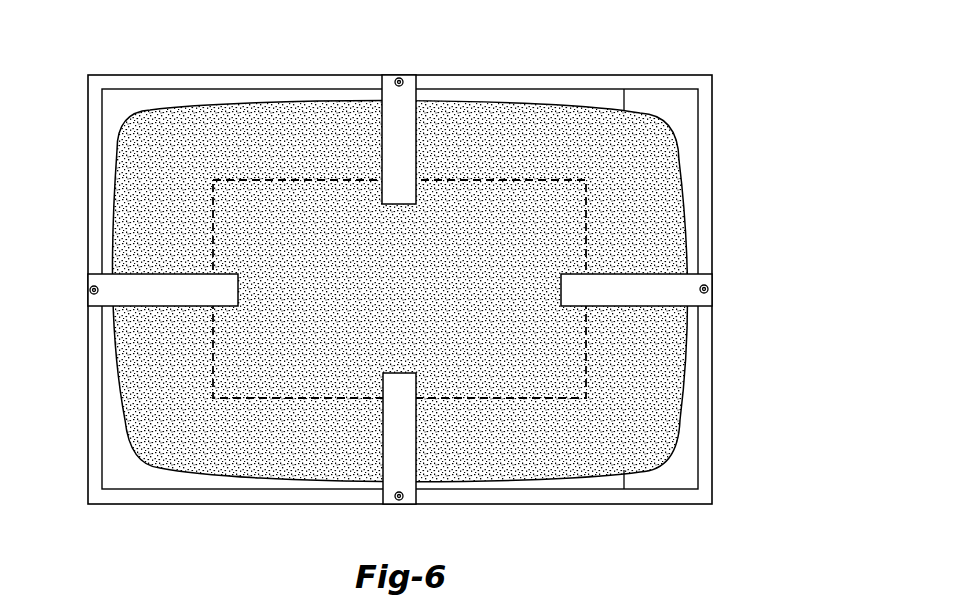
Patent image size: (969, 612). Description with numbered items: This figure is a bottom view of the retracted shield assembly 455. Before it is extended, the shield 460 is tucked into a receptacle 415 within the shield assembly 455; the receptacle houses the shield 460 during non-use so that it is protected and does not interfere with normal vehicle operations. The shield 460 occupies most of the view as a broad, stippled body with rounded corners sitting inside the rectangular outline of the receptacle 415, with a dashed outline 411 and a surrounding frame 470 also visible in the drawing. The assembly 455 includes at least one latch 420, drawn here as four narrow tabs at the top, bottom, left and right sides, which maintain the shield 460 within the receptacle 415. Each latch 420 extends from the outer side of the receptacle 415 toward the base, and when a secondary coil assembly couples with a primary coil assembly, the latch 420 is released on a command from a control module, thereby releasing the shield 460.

The shield assembly 455 is at (706, 46).
The frame 470 is at (676, 114).
The receptacle 415 is at (137, 107).
The shield 460 is at (662, 220).
The component outline 411 is at (515, 398).
The latch 420 is at (411, 79).